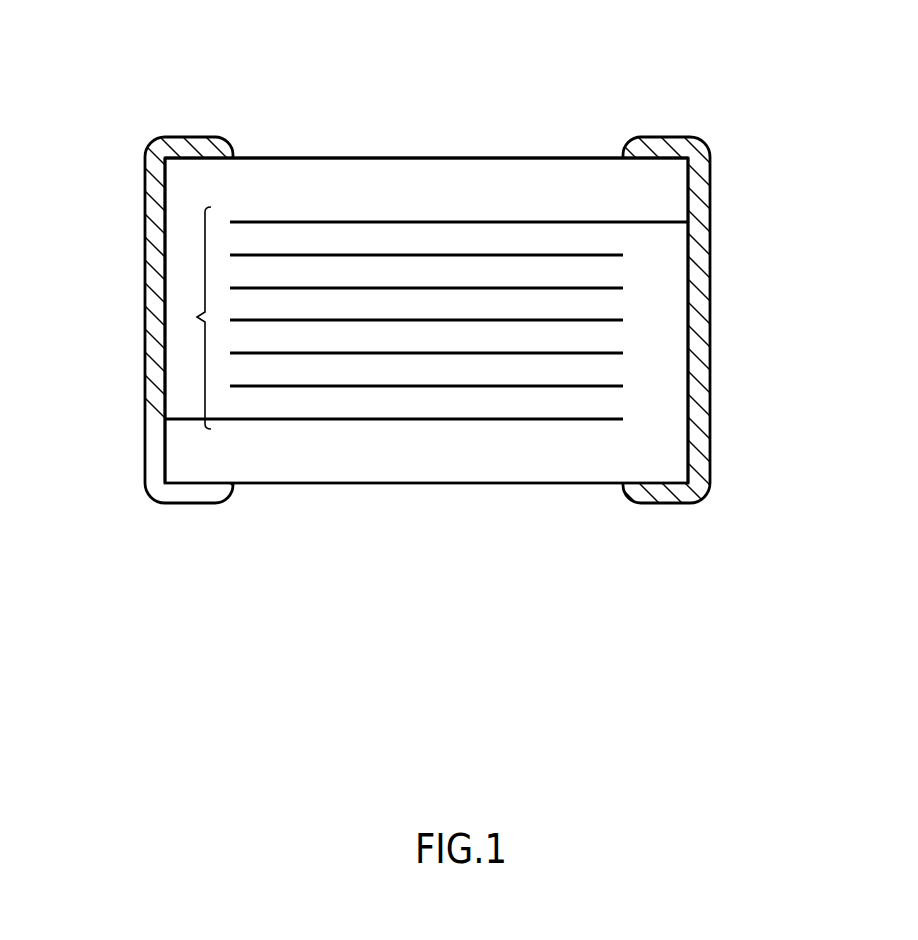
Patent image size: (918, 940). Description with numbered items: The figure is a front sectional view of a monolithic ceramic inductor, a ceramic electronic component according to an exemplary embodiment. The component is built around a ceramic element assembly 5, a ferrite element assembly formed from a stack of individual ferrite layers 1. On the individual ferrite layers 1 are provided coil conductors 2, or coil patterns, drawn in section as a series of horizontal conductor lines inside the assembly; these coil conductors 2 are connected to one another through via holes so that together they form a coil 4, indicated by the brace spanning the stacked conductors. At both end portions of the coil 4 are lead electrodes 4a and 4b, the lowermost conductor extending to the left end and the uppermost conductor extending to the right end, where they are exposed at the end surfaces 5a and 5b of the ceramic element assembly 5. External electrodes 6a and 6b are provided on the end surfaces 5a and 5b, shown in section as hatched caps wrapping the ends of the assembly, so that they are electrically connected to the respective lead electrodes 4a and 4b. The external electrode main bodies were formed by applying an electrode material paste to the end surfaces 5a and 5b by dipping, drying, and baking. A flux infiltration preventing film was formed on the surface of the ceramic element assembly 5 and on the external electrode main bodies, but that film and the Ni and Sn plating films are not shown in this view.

The ferrite layer 1 is at (342, 275).
The coil conductor 2 is at (493, 353).
The coil 4 is at (187, 317).
The lead electrode 4a is at (188, 419).
The lead electrode 4b is at (688, 222).
The ceramic element assembly 5 is at (483, 158).
The end surface 5a is at (165, 377).
The end surface 5b is at (688, 388).
The external electrode 6a is at (146, 190).
The external electrode 6b is at (710, 333).